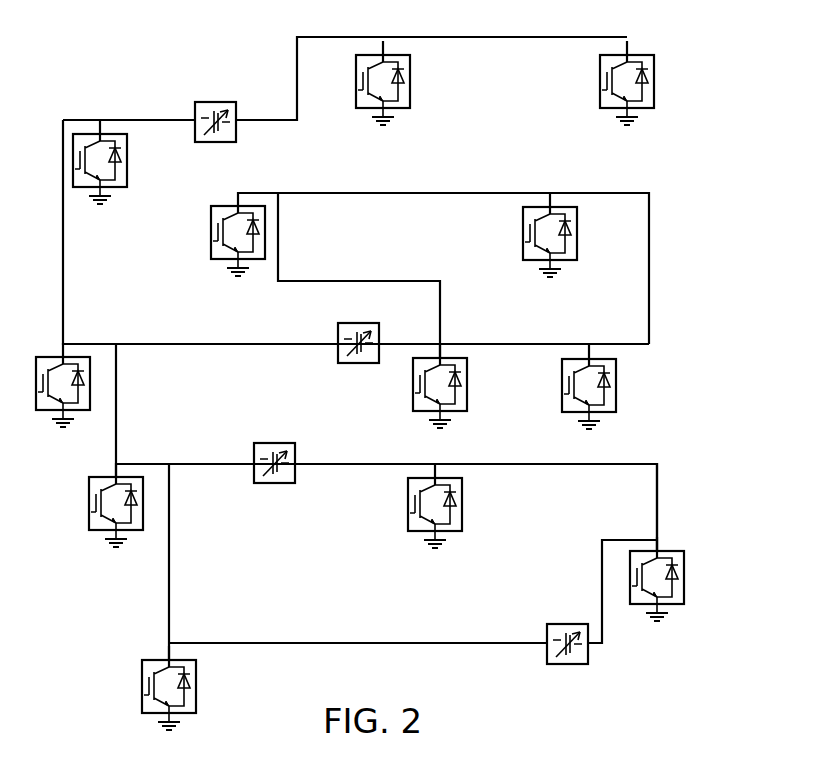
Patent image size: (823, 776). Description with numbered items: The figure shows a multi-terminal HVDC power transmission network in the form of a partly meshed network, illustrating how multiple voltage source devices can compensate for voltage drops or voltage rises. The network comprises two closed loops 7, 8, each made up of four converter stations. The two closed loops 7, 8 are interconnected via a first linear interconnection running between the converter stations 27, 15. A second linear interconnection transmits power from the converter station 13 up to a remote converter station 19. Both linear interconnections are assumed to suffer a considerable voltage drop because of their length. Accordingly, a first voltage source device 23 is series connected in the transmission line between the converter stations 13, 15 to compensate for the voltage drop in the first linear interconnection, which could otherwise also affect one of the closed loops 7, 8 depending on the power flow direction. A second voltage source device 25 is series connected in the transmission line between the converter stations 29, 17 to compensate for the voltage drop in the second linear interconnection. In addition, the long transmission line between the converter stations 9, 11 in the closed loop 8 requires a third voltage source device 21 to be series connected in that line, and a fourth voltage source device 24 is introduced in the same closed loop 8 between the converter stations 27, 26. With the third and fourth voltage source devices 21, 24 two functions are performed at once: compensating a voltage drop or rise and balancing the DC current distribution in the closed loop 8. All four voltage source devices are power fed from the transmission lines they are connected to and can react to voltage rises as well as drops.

The closed loop 7 is at (590, 299).
The closed loop 8 is at (554, 521).
The converter station 9 is at (143, 692).
The converter station 11 is at (680, 603).
The converter station 13 is at (50, 412).
The converter station 15 is at (414, 383).
The converter station 17 is at (358, 109).
The remote converter station 19 is at (652, 108).
The third voltage source device 21 is at (563, 665).
The first voltage source device 23 is at (338, 364).
The fourth voltage source device 24 is at (265, 483).
The second voltage source device 25 is at (212, 102).
The converter station 26 is at (413, 532).
The converter station 27 is at (98, 532).
The converter station 29 is at (123, 187).